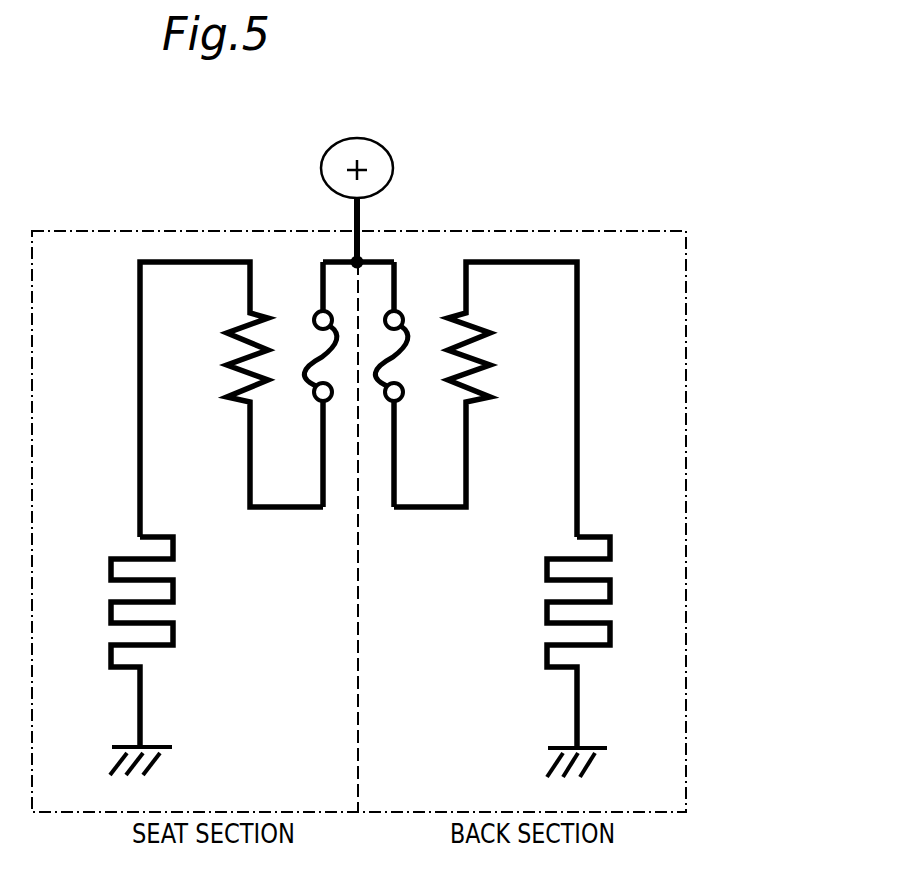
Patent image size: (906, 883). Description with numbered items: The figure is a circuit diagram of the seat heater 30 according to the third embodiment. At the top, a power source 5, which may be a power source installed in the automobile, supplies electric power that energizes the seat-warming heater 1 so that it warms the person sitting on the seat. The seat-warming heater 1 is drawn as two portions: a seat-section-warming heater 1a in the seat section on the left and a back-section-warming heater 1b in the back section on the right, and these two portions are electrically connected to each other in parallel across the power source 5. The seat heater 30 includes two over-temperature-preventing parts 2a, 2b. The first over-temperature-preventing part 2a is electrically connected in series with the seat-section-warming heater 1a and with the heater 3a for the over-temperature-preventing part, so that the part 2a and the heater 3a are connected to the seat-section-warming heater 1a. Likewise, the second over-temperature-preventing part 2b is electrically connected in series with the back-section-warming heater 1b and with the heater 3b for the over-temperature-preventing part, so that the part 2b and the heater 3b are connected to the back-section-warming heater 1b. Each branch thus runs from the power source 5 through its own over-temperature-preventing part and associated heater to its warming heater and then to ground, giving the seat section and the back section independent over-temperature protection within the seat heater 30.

The seat-warming heater 1 is at (360, 657).
The seat-section-warming heater 1a is at (175, 595).
The back-section-warming heater 1b is at (547, 608).
The first over-temperature-preventing part 2a is at (307, 340).
The second over-temperature-preventing part 2b is at (407, 320).
The heater for the over-temperature-preventing part 3a is at (220, 322).
The heater for the over-temperature-preventing part 3b is at (495, 330).
The power source 5 is at (387, 160).
The seat heater 30 is at (722, 288).